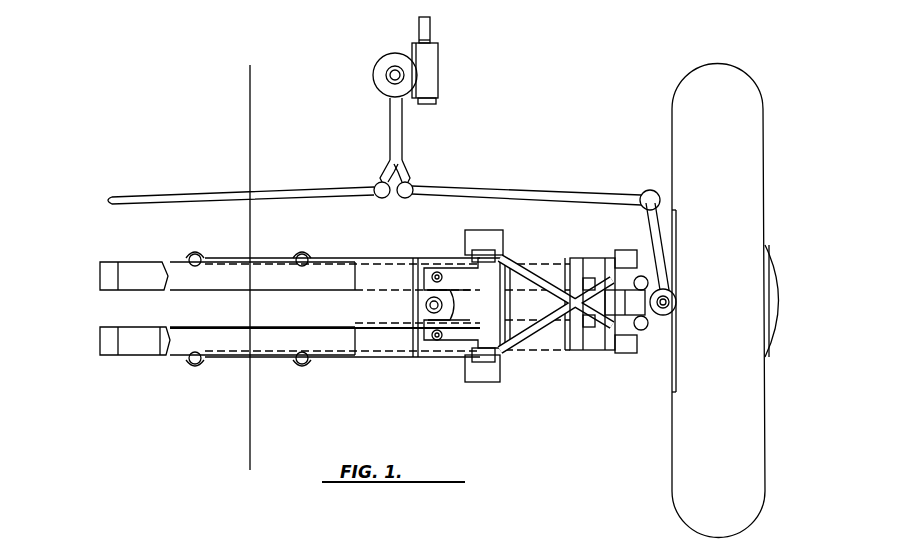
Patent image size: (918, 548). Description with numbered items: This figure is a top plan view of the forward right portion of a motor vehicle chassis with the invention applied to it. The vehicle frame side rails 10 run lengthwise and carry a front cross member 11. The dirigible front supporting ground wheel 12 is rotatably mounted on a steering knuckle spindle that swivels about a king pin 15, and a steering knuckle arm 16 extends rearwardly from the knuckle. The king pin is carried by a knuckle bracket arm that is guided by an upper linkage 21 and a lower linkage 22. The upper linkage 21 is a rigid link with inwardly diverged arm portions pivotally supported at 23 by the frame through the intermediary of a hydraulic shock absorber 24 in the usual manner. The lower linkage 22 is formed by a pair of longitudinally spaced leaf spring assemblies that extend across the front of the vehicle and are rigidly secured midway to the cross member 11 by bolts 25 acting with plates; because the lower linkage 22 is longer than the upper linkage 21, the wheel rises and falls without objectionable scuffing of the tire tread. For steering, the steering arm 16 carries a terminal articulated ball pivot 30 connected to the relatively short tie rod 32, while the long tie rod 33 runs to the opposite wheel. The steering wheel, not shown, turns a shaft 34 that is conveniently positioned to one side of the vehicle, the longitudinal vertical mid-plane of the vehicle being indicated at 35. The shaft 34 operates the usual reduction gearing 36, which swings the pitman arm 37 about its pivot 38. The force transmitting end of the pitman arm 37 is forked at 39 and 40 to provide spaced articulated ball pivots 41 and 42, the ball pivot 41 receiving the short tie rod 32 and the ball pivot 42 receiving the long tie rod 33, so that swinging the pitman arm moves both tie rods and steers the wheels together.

The vehicle frame side rails 10 is at (465, 230).
The front cross member 11 is at (232, 264).
The dirigible front supporting ground wheel 12 is at (748, 152).
The king pin 15 is at (678, 302).
The steering knuckle arm 16 is at (656, 228).
The upper linkage 21 is at (545, 324).
The lower linkage 22 is at (138, 329).
The pivotal support 23 is at (466, 370).
The hydraulic shock absorber 24 is at (462, 303).
The bolts 25 is at (198, 366).
The articulated ball pivot 30 is at (652, 190).
The tie rod 32 is at (522, 190).
The tie rod 33 is at (286, 188).
The shaft 34 is at (432, 30).
The longitudinal vertical mid-plane 35 is at (250, 102).
The reduction gearing 36 is at (425, 64).
The pitman arm 37 is at (402, 134).
The pivot 38 is at (392, 68).
The fork 39 is at (408, 172).
The fork 40 is at (378, 172).
The articulated ball pivot 41 is at (405, 198).
The articulated ball pivot 42 is at (378, 198).